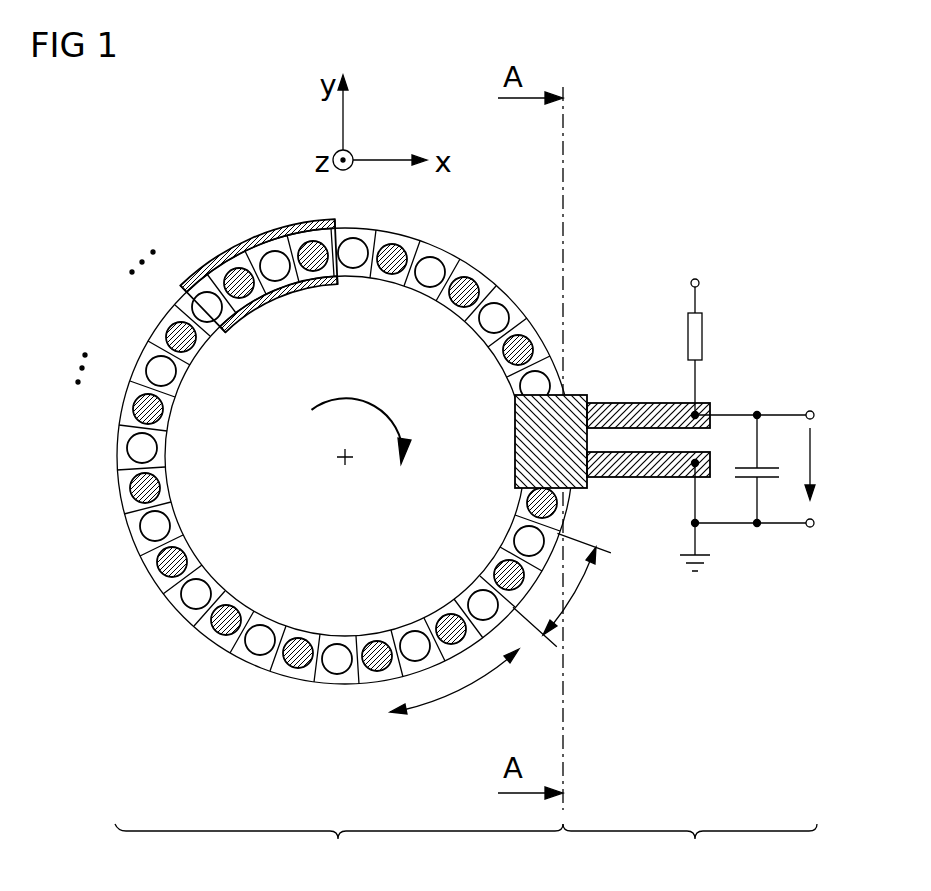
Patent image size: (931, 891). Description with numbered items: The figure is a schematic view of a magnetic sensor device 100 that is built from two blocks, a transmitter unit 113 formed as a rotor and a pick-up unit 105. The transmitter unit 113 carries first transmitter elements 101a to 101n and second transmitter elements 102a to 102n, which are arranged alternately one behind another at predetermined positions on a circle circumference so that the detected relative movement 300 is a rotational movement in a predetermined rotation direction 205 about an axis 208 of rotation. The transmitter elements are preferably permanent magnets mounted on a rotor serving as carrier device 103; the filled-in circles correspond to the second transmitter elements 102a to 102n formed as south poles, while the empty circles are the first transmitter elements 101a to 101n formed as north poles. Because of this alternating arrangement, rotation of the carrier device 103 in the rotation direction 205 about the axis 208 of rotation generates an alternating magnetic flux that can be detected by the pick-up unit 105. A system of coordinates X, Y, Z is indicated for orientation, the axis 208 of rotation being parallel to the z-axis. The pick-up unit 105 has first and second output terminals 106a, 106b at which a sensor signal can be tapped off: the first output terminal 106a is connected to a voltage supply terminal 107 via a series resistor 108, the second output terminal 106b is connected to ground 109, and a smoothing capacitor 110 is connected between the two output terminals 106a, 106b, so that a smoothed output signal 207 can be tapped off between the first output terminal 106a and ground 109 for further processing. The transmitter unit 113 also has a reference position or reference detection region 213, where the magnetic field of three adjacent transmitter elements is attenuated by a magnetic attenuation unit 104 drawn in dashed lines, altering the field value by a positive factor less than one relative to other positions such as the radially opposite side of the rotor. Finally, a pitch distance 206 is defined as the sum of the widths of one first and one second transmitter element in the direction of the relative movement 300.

The magnetic sensor device 100 is at (403, 375).
The first transmitter element 101a is at (152, 366).
The first transmitter element 101n is at (128, 452).
The second transmitter element 102a is at (128, 413).
The second transmitter element 102n is at (125, 495).
The carrier device 103 is at (203, 509).
The magnetic attenuation unit 104 is at (258, 270).
The pick-up unit 105 is at (690, 851).
The first output terminal 106a is at (636, 403).
The second output terminal 106b is at (638, 478).
The voltage supply terminal 107 is at (700, 283).
The series resistor 108 is at (703, 338).
The ground 109 is at (706, 571).
The smoothing capacitor 110 is at (814, 528).
The transmitter unit 113 is at (339, 851).
The rotation direction 205 is at (372, 402).
The pitch distance 206 is at (577, 593).
The smoothed output signal 207 is at (814, 453).
The axis of rotation 208 is at (340, 463).
The reference detection region 213 is at (247, 237).
The relative movement 300 is at (455, 694).